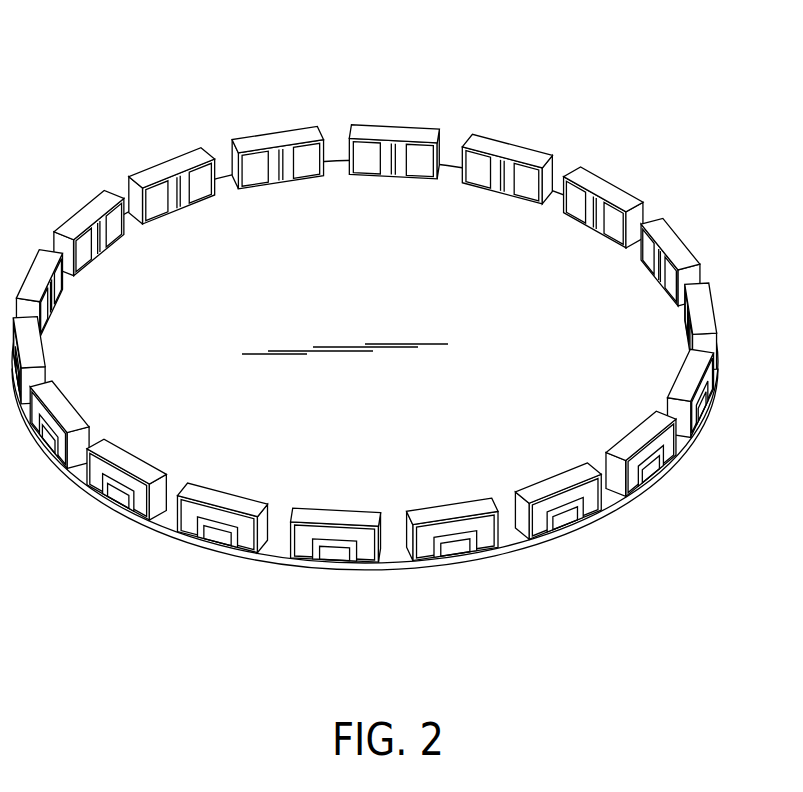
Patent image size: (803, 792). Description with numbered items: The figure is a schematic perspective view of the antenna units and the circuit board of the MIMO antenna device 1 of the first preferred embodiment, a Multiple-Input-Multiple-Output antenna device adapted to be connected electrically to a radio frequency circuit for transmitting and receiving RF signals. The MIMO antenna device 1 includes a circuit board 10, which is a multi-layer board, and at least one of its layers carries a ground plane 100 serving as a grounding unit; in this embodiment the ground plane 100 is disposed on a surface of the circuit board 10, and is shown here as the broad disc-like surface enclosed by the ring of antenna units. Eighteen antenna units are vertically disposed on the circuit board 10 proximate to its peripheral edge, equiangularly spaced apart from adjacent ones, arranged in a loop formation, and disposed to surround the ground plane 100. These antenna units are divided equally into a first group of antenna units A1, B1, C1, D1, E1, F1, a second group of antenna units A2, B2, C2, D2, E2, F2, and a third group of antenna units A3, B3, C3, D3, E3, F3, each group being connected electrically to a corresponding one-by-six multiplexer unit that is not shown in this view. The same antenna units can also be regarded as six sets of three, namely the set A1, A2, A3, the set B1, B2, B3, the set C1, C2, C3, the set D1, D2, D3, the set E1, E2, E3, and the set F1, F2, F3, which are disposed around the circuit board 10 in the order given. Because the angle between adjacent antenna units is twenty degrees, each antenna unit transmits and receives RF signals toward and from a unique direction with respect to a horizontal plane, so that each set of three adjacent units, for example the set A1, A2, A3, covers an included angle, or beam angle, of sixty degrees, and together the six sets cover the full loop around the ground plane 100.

The MIMO antenna device 1 is at (378, 323).
The ground plane 100 is at (313, 217).
The circuit board 10 is at (517, 566).
The antenna unit A1 is at (394, 167).
The antenna unit A2 is at (507, 181).
The antenna unit A3 is at (604, 215).
The antenna unit B1 is at (661, 264).
The antenna unit B2 is at (681, 326).
The antenna unit B3 is at (672, 393).
The antenna unit C1 is at (631, 453).
The antenna unit C2 is at (557, 496).
The antenna unit C3 is at (452, 519).
The antenna unit D1 is at (336, 522).
The antenna unit D2 is at (222, 508).
The antenna unit D3 is at (127, 475).
The antenna unit E1 is at (67, 425).
The antenna unit E2 is at (42, 360).
The antenna unit E3 is at (50, 294).
The antenna unit F1 is at (92, 234).
The antenna unit F2 is at (172, 191).
The antenna unit F3 is at (278, 168).